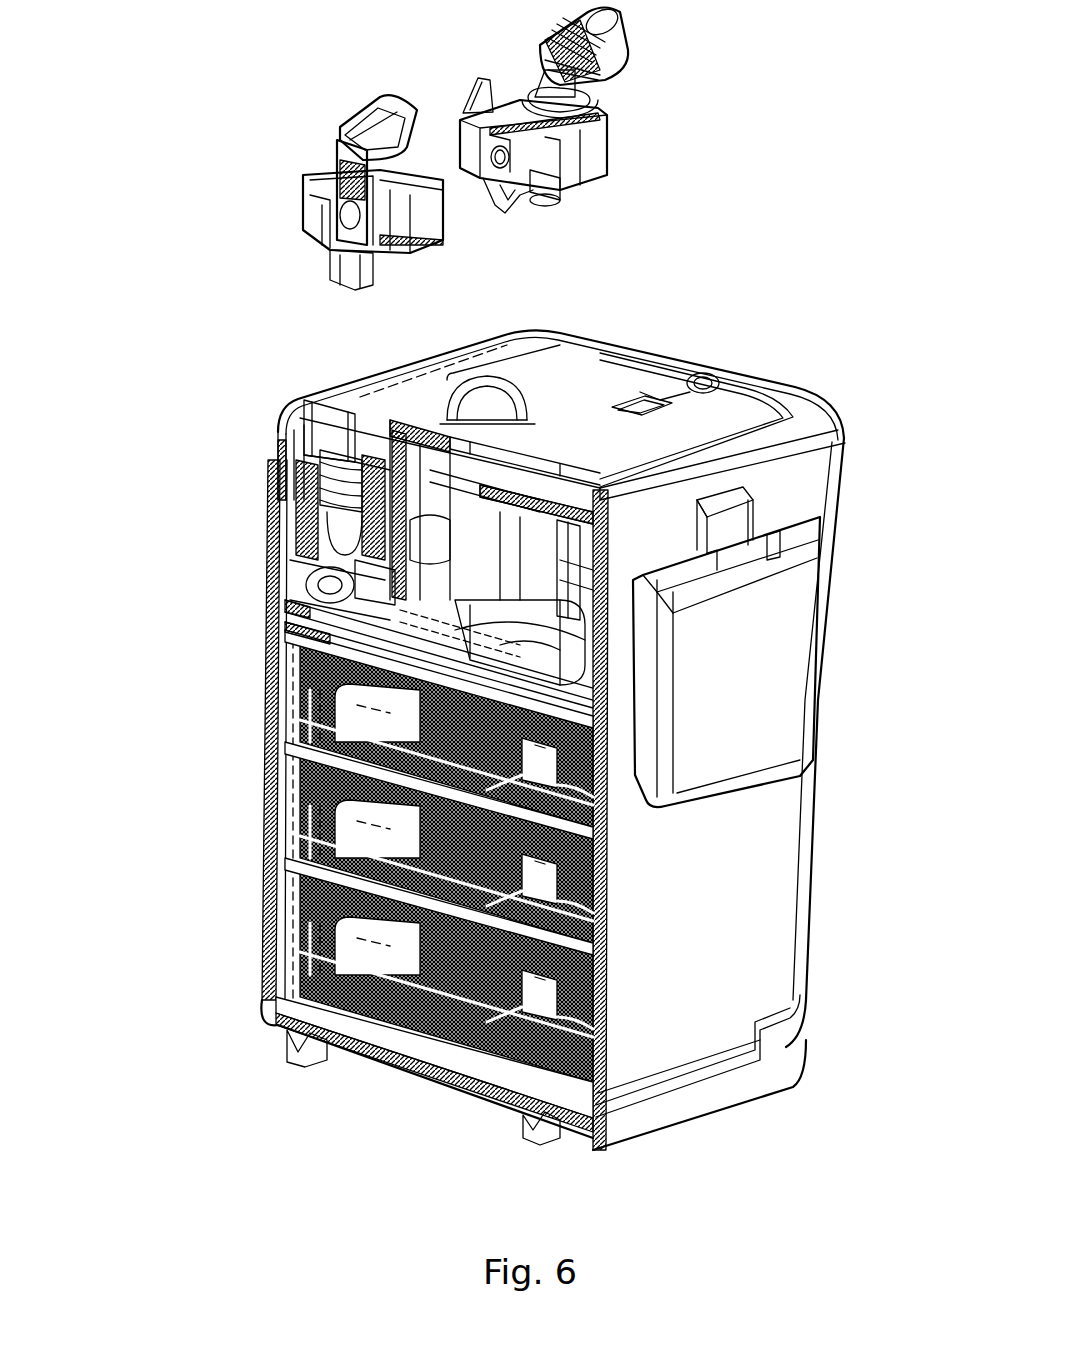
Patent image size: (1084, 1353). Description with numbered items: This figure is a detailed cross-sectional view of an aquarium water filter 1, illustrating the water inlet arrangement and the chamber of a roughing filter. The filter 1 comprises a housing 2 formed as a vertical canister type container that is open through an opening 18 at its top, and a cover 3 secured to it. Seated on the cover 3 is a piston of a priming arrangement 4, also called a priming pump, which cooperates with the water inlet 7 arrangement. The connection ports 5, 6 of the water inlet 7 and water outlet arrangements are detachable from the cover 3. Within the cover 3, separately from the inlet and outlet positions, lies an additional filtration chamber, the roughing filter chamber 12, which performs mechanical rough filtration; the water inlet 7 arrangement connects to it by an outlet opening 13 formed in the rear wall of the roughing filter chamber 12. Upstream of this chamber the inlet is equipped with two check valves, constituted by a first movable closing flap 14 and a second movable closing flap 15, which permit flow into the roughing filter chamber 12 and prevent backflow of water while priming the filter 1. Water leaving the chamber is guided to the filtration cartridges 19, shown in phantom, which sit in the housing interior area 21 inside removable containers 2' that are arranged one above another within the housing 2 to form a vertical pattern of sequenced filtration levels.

The water filter 1 is at (273, 314).
The housing 2 is at (500, 788).
The removable containers 2' is at (168, 730).
The cover 3 is at (767, 342).
The priming arrangement 4 is at (540, 365).
The connection port 5 is at (390, 97).
The connection port 6 is at (610, 60).
The water inlet arrangement 7 is at (263, 470).
The roughing filter chamber 12 is at (290, 540).
The outlet opening 13 is at (500, 615).
The first movable closing flap 14 is at (263, 622).
The second movable closing flap 15 is at (263, 657).
The opening 18 is at (633, 590).
The filtration cartridges 19 is at (293, 717).
The housing interior area 21 is at (357, 1027).